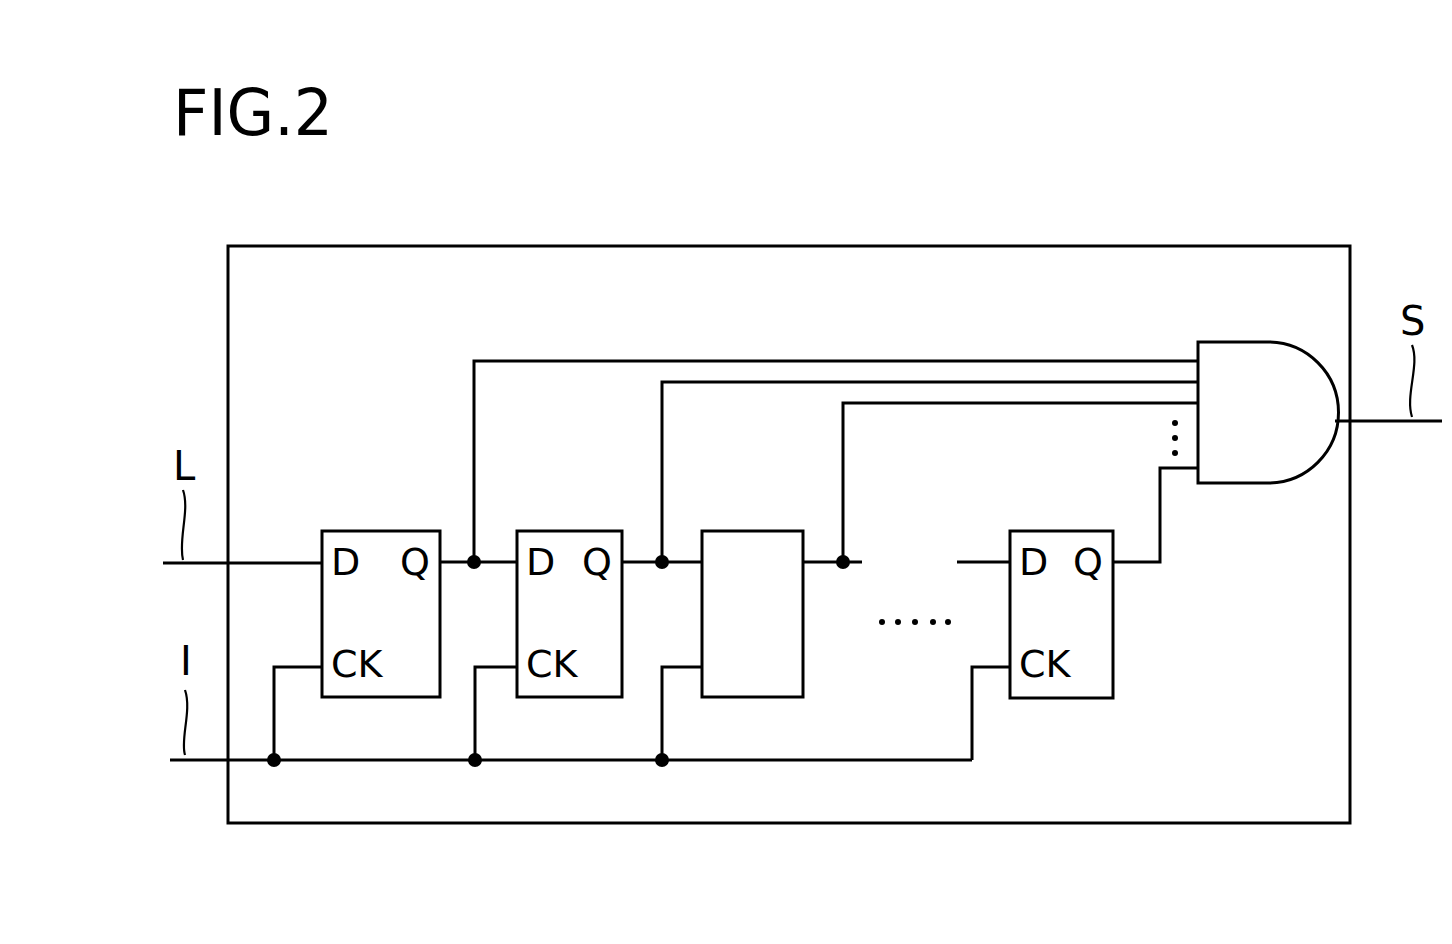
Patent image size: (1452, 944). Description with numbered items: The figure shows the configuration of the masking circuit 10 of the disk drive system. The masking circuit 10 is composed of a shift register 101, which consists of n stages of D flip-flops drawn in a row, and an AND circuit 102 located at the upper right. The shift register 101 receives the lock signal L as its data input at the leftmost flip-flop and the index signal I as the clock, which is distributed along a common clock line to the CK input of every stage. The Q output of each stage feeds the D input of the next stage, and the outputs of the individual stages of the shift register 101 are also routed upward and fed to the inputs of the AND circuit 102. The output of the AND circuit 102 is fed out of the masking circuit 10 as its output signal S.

The masking circuit 10 is at (843, 263).
The shift register 101 is at (785, 750).
The AND circuit 102 is at (1238, 365).